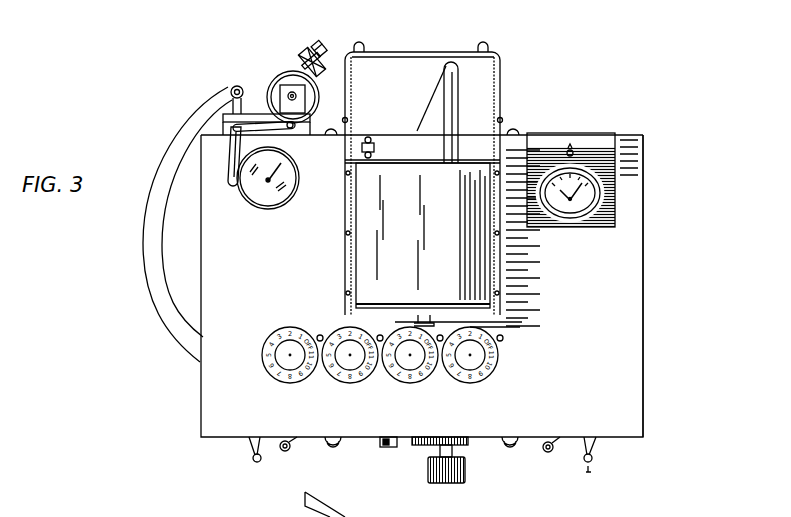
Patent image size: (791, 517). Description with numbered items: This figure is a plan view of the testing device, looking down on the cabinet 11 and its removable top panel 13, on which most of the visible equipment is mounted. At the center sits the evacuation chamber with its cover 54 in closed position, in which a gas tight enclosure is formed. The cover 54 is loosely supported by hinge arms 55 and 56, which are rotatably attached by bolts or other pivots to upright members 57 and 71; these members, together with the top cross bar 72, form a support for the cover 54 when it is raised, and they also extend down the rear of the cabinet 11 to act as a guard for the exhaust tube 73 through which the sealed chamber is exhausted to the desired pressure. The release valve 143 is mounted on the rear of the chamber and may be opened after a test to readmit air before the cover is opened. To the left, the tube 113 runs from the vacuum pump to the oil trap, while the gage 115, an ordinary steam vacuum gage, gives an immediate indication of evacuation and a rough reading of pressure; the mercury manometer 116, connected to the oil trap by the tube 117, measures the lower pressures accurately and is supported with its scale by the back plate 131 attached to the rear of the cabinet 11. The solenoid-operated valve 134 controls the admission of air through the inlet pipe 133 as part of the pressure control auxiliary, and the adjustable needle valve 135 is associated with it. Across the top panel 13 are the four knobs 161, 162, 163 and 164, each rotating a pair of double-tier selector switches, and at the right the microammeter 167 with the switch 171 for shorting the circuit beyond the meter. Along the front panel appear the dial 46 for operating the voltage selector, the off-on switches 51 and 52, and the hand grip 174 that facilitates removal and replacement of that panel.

The cabinet 11 is at (201, 405).
The top panel 13 is at (643, 397).
The dial 46 is at (427, 468).
The off-on switch 51 is at (289, 449).
The off-on switch 52 is at (544, 450).
The cover 54 is at (490, 260).
The hinge arm 55 is at (348, 139).
The hinge arm 56 is at (464, 149).
The upright member 57 is at (352, 84).
The upright member 71 is at (499, 89).
The top cross bar 72 is at (404, 52).
The exhaust tube 73 is at (427, 100).
The tube 113 is at (150, 228).
The gage 115 is at (273, 206).
The mercury manometer 116 is at (292, 133).
The tube 117 is at (227, 172).
The back plate 131 is at (257, 112).
The inlet pipe 133 is at (310, 50).
The solenoid-operated valve 134 is at (282, 78).
The adjustable needle valve 135 is at (326, 48).
The release valve 143 is at (375, 147).
The knob 161 is at (299, 382).
The knob 162 is at (359, 382).
The knob 163 is at (421, 382).
The knob 164 is at (485, 382).
The microammeter 167 is at (588, 215).
The switch 171 is at (572, 149).
The hand grip 174 is at (256, 462).